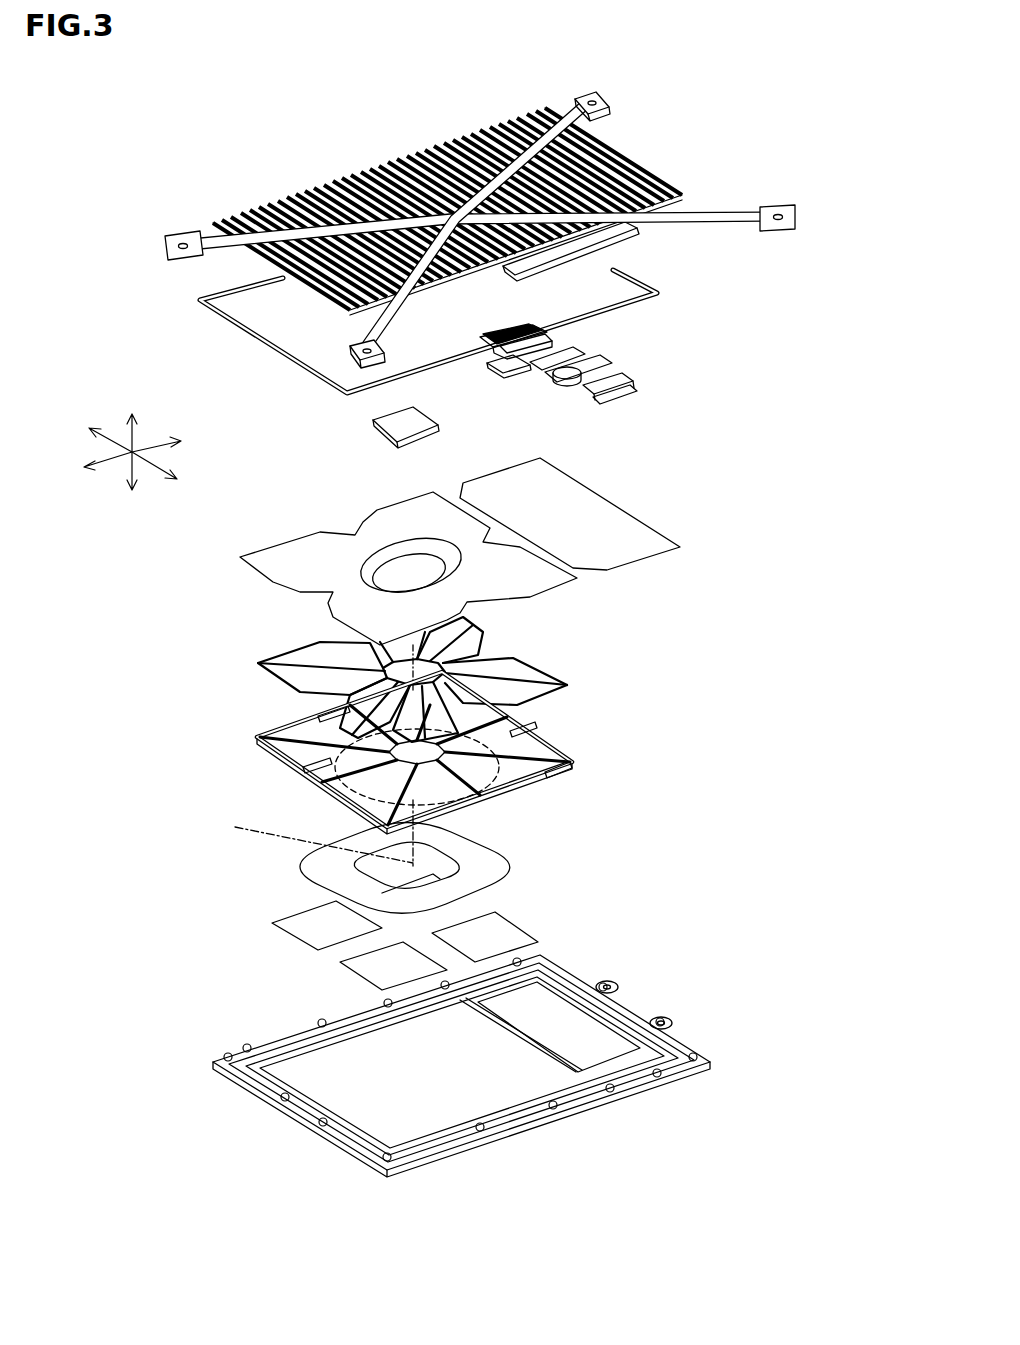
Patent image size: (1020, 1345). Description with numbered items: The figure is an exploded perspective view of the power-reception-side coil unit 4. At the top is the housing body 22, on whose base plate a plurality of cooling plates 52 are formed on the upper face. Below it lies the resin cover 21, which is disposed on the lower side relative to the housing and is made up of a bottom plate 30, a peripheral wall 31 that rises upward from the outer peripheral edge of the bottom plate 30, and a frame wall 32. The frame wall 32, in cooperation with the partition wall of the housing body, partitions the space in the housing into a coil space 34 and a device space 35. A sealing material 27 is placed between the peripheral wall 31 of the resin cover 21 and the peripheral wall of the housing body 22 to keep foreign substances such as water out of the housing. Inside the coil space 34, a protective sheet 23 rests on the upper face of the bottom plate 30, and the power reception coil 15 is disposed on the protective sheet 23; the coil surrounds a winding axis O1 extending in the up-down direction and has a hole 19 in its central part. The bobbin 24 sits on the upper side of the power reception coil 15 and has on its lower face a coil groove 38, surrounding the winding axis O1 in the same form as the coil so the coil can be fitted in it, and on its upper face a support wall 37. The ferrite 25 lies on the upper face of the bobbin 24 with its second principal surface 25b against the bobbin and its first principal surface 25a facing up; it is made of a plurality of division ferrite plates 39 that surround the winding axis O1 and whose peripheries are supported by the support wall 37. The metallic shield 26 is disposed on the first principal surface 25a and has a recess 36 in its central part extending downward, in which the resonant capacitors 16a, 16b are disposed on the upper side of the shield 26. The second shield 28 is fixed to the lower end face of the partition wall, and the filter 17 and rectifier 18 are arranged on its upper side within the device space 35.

The power-reception-side coil unit 4 is at (728, 97).
The cooling plates 52 is at (433, 139).
The housing body 22 is at (627, 157).
The sealing material 27 is at (290, 355).
The filter 17 is at (513, 328).
The rectifier 18 is at (593, 362).
The resonant capacitor 16a is at (432, 414).
The resonant capacitor 16b is at (432, 412).
The shield 28 is at (510, 482).
The shield 26 is at (297, 547).
The recess 36 is at (368, 558).
The ferrite 25 is at (407, 679).
The first principal surface 25a is at (543, 677).
The second principal surface 25b is at (543, 697).
The division ferrite plates 39 is at (525, 667).
The bobbin 24 is at (435, 753).
The support wall 37 is at (527, 748).
The coil groove 38 is at (540, 786).
The winding axis O1 is at (306, 833).
The power reception coil 15 is at (434, 868).
The hole 19 is at (467, 862).
The protective sheet 23 is at (272, 923).
The resin cover 21 is at (498, 1066).
The frame wall 32 is at (618, 990).
The bottom plate 30 is at (345, 1100).
The peripheral wall 31 is at (345, 1152).
The coil space 34 is at (500, 1098).
The device space 35 is at (600, 1058).